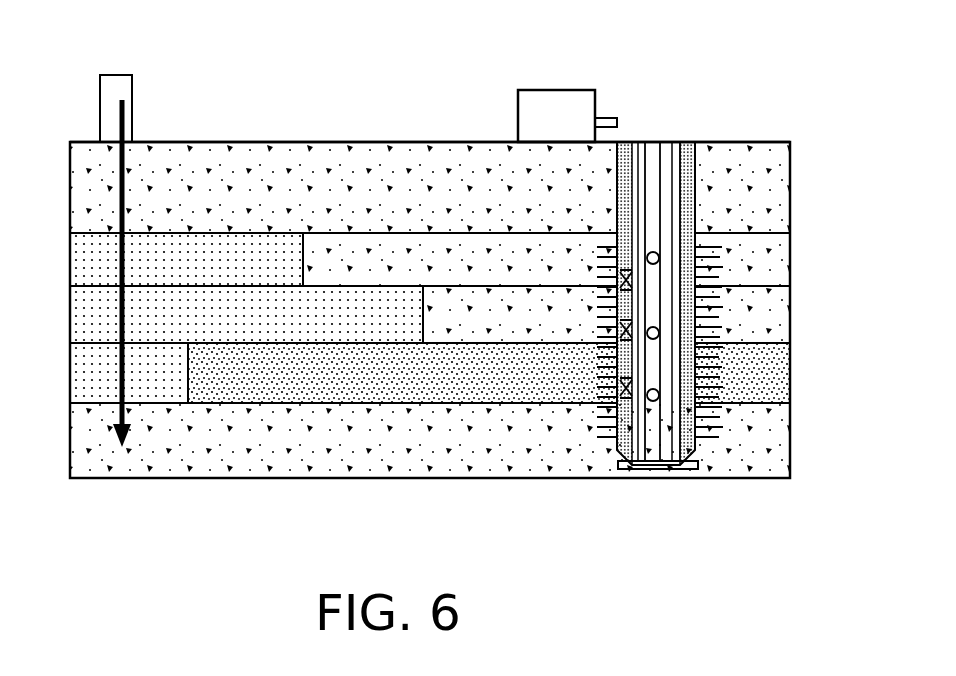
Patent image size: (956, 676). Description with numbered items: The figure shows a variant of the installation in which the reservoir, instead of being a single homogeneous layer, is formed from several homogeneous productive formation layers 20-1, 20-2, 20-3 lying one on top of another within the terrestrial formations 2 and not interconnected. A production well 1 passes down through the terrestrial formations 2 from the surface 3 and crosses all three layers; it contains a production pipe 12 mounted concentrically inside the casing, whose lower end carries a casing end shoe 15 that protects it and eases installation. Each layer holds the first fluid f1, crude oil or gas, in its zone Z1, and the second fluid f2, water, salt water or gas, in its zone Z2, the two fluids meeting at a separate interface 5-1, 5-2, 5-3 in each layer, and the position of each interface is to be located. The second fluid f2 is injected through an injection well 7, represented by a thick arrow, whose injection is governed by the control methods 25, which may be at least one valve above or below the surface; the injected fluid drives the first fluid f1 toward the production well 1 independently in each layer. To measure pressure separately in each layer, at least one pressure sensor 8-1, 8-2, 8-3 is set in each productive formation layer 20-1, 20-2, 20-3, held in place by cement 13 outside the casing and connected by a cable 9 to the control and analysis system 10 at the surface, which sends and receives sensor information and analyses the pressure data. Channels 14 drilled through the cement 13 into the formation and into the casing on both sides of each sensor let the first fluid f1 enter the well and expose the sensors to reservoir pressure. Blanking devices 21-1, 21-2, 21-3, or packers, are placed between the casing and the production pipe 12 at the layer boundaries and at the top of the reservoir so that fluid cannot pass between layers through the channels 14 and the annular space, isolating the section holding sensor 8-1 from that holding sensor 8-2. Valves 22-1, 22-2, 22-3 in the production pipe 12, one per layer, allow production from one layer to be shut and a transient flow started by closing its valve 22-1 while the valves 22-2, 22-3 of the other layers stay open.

The production well 1 is at (706, 178).
The terrestrial formations 2 is at (776, 175).
The surface 3 is at (770, 142).
The interface 5-1 is at (308, 250).
The interface 5-2 is at (423, 300).
The interface 5-3 is at (187, 380).
The injection well 7 is at (126, 108).
The pressure sensor 8-1 is at (613, 277).
The pressure sensor 8-2 is at (613, 329).
The pressure sensor 8-3 is at (613, 384).
The cable 9 is at (617, 112).
The control and analysis system 10 is at (546, 90).
The production pipe 12 is at (652, 150).
The cement 13 is at (688, 150).
The channels 14 is at (612, 418).
The casing end shoe 15 is at (696, 470).
The productive formation layer 20-1 is at (833, 260).
The productive formation layer 20-2 is at (833, 322).
The productive formation layer 20-3 is at (790, 388).
The blanking device 21-1 is at (616, 236).
The blanking device 21-2 is at (700, 266).
The blanking device 21-3 is at (727, 343).
The valve 22-1 is at (630, 255).
The valve 22-2 is at (613, 300).
The valve 22-3 is at (660, 470).
The methods for controlling the injection 25 is at (109, 78).
The zone Z1 is at (462, 322).
The zone Z2 is at (104, 322).
The first fluid f1 is at (770, 380).
The second fluid f2 is at (152, 378).